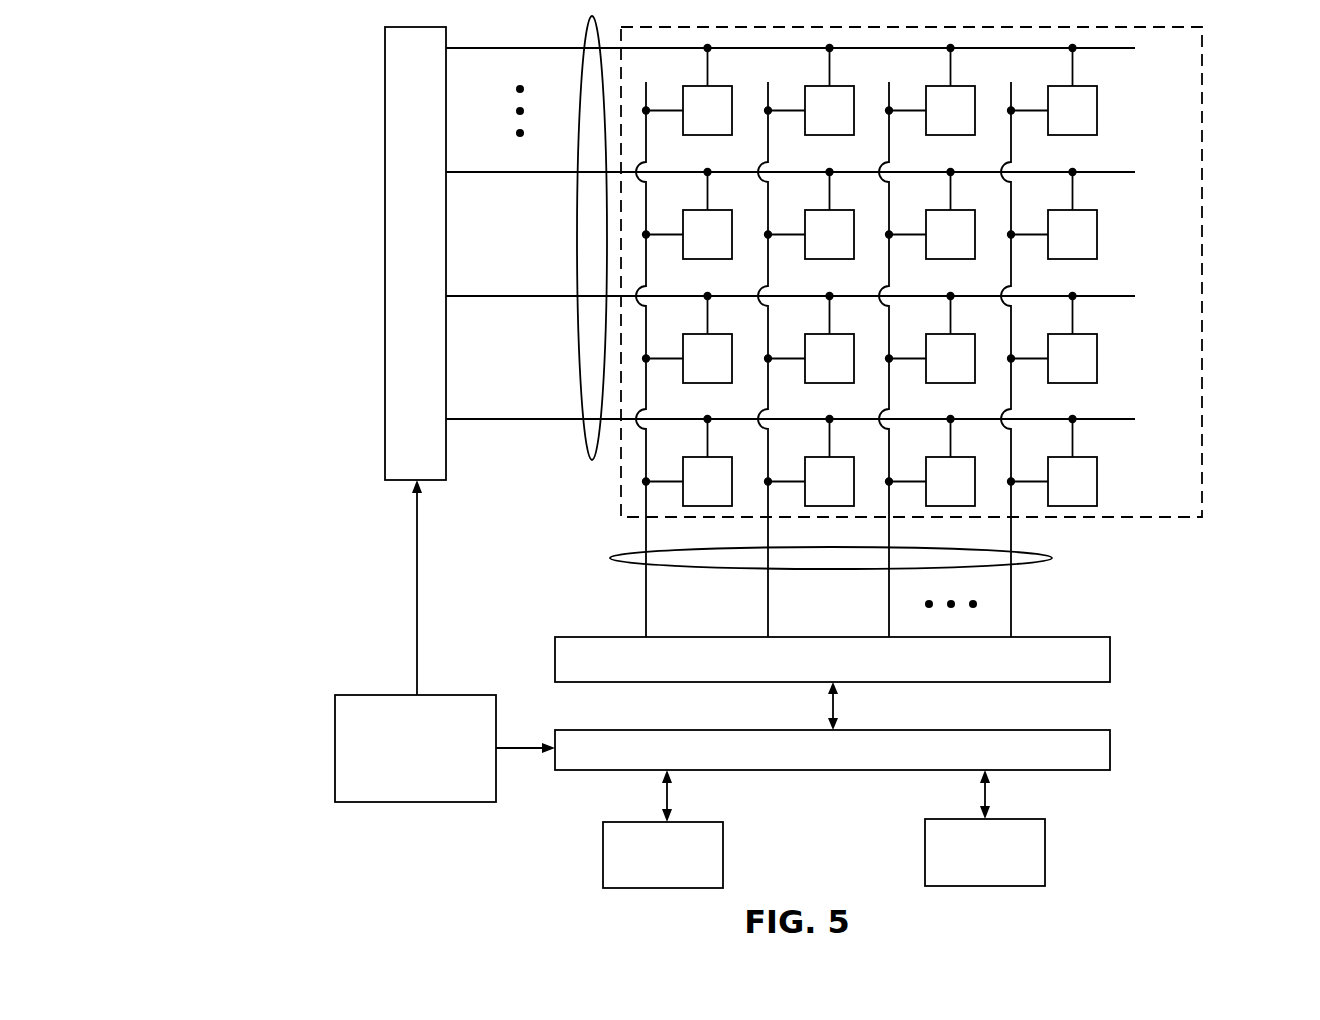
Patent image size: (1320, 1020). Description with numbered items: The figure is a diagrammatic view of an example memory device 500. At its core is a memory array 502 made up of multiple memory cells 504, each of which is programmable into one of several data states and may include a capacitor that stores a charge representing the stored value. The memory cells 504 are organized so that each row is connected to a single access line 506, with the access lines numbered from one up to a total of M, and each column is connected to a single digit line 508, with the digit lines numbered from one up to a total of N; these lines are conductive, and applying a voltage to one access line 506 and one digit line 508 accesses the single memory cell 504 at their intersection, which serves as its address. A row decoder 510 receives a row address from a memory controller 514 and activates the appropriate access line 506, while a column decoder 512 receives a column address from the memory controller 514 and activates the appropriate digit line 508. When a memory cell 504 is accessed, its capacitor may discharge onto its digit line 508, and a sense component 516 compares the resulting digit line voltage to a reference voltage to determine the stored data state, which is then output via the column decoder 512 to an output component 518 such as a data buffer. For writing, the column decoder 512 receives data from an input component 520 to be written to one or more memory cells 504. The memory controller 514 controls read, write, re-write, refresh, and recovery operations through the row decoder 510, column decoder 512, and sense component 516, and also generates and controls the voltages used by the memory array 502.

The memory device 500 is at (222, 46).
The memory array 502 is at (1203, 30).
The memory cell 504 is at (1097, 235).
The access line 506 is at (593, 460).
The digit line 508 is at (1052, 558).
The row decoder 510 is at (385, 383).
The column decoder 512 is at (1110, 770).
The memory controller 514 is at (415, 802).
The sense component 516 is at (1110, 682).
The output component 518 is at (1045, 852).
The input component 520 is at (723, 838).